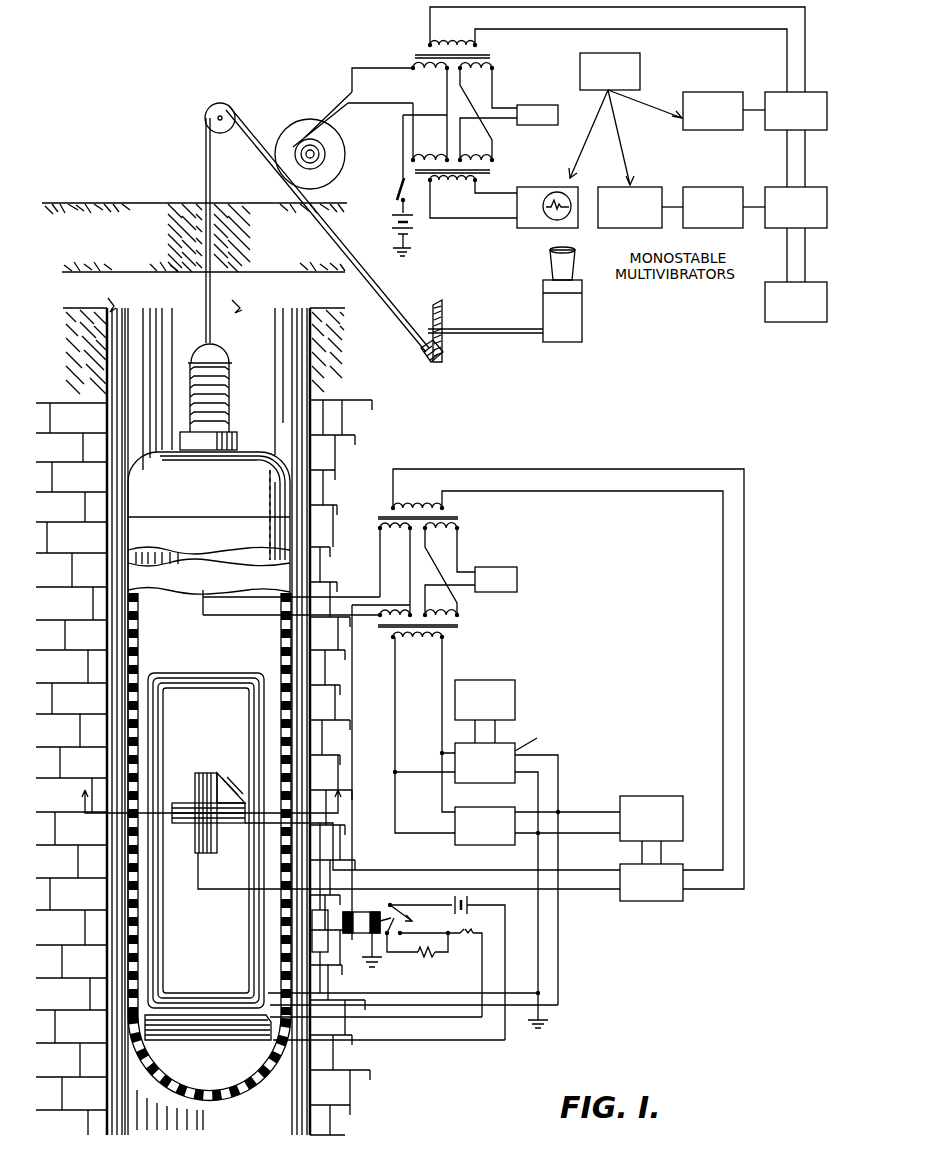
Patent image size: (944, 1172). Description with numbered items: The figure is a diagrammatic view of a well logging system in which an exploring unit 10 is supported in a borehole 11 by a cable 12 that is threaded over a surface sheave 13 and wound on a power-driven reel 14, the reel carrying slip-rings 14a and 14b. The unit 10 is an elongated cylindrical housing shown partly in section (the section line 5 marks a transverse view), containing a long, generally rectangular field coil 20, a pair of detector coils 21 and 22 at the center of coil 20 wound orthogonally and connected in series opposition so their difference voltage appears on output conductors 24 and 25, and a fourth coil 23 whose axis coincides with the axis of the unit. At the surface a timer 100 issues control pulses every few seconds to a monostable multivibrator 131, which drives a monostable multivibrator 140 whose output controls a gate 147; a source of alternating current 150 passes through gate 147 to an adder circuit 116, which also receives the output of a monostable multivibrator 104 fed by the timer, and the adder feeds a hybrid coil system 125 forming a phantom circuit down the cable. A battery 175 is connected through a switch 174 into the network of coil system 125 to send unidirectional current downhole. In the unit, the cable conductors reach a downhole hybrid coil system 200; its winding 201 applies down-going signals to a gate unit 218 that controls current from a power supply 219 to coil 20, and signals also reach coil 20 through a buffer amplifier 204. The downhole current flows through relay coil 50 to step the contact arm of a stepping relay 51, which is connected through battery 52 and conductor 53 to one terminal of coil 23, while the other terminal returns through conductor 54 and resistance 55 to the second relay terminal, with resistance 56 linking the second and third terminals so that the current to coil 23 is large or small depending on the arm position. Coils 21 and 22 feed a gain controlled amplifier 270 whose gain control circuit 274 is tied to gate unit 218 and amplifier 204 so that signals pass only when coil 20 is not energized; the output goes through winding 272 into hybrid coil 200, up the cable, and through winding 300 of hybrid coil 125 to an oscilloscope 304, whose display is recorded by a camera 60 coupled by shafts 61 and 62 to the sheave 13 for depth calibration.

The section line 5- 5 is at (352, 792).
The exploring unit 10 is at (233, 482).
The borehole 11 is at (108, 352).
The cable 12 is at (212, 327).
The surface sheave 13 is at (206, 114).
The power-driven reel 14 is at (327, 140).
The slip-ring 14a is at (327, 146).
The slip-ring 14b is at (316, 160).
The field coil 20 is at (166, 716).
The detector coil 21 is at (217, 843).
The detector coil 22 is at (186, 795).
The fourth coil 23 is at (203, 1041).
The output conductor 24 is at (377, 868).
The output conductor 25 is at (391, 886).
The relay coil 50 is at (360, 934).
The stepping relay 51 is at (392, 939).
The battery 52 is at (442, 968).
The conductor 53 is at (457, 1041).
The conductor 54 is at (395, 1018).
The resistance 55 is at (469, 932).
The resistance 56 is at (428, 955).
The camera 60 is at (573, 326).
The shaft 61 is at (467, 329).
The shaft 62 is at (378, 302).
The timer 100 is at (640, 58).
The monostable multivibrator 104 is at (724, 111).
The adder circuit 116 is at (796, 111).
The hybrid coil system 125 is at (415, 97).
The monostable multivibrator 131 is at (640, 207).
The monostable multivibrator 140 is at (724, 207).
The gate 147 is at (796, 207).
The source of alternating current 150 is at (796, 327).
The switch 174 is at (399, 194).
The battery 175 is at (402, 237).
The downhole hybrid coil system 200 is at (541, 679).
The winding 201 is at (423, 641).
The buffer amplifier 204 is at (537, 826).
The gate unit 218 is at (532, 876).
The power supply 219 is at (517, 693).
The gain controlled amplifier 270 is at (650, 902).
The winding 272 is at (443, 506).
The gain control circuit 274 is at (651, 830).
The winding 300 is at (452, 192).
The oscilloscope 304 is at (522, 227).